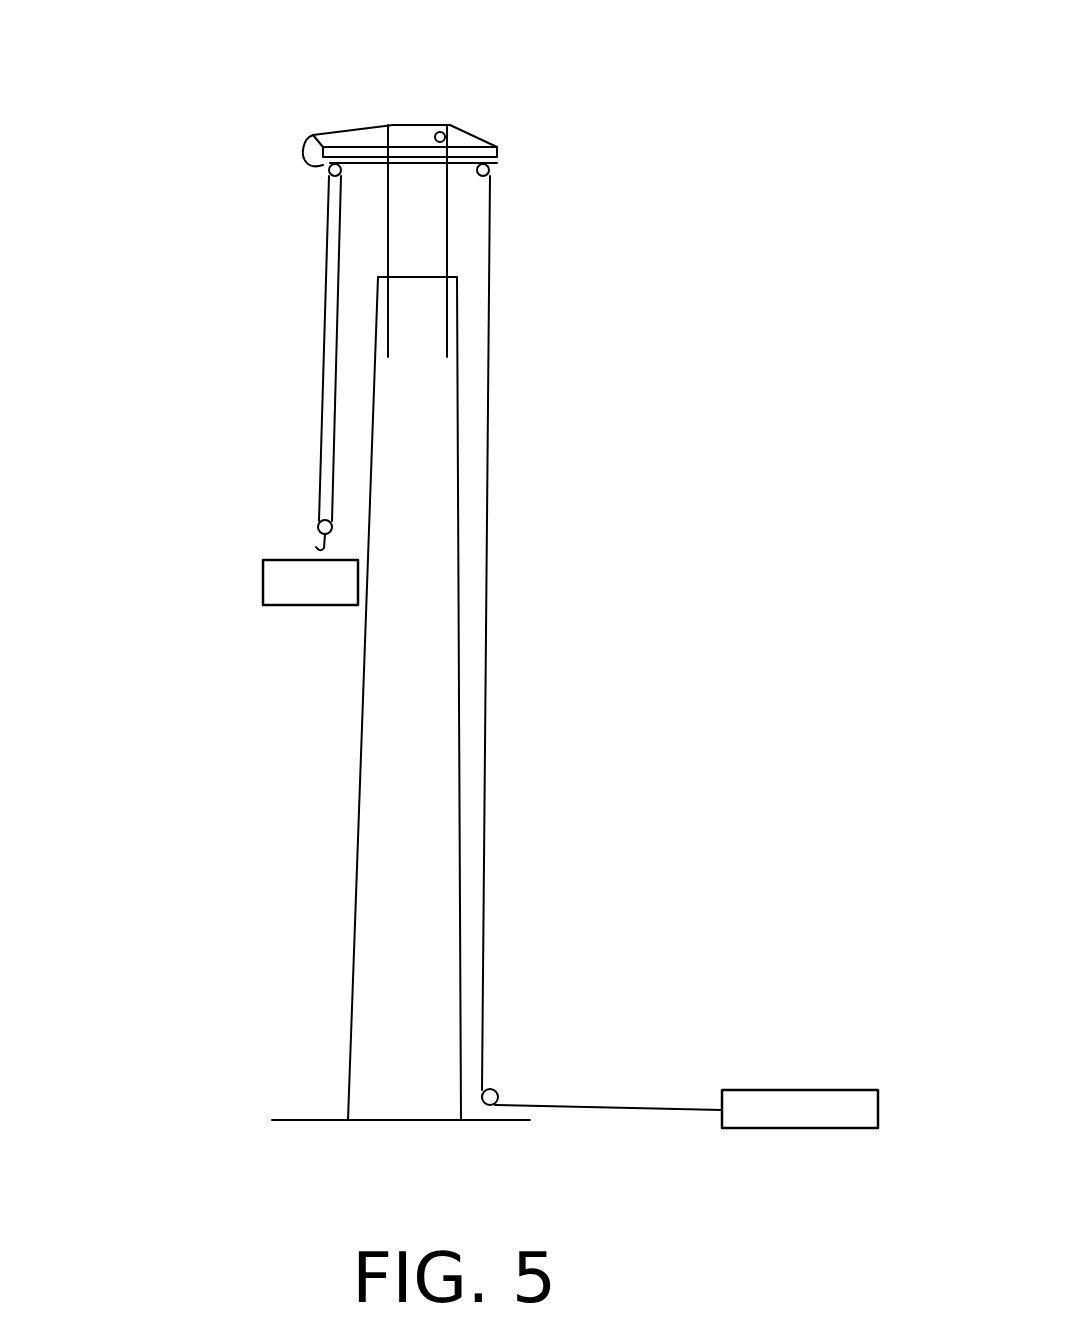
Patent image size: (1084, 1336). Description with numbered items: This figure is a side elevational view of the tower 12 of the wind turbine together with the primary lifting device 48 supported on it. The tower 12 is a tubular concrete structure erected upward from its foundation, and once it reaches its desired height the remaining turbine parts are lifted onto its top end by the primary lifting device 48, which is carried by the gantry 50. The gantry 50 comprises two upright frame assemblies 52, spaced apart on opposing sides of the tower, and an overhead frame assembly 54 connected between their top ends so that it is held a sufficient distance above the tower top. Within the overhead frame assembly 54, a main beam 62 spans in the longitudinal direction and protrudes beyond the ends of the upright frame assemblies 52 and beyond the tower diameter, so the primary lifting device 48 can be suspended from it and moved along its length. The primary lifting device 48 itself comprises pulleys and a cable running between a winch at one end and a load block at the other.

The tower 12 is at (353, 892).
The primary lifting device 48 is at (230, 550).
The gantry 50 is at (616, 182).
The upright frame assembly 52 is at (452, 238).
The overhead frame assembly 54 is at (440, 118).
The main beam 62 is at (307, 150).